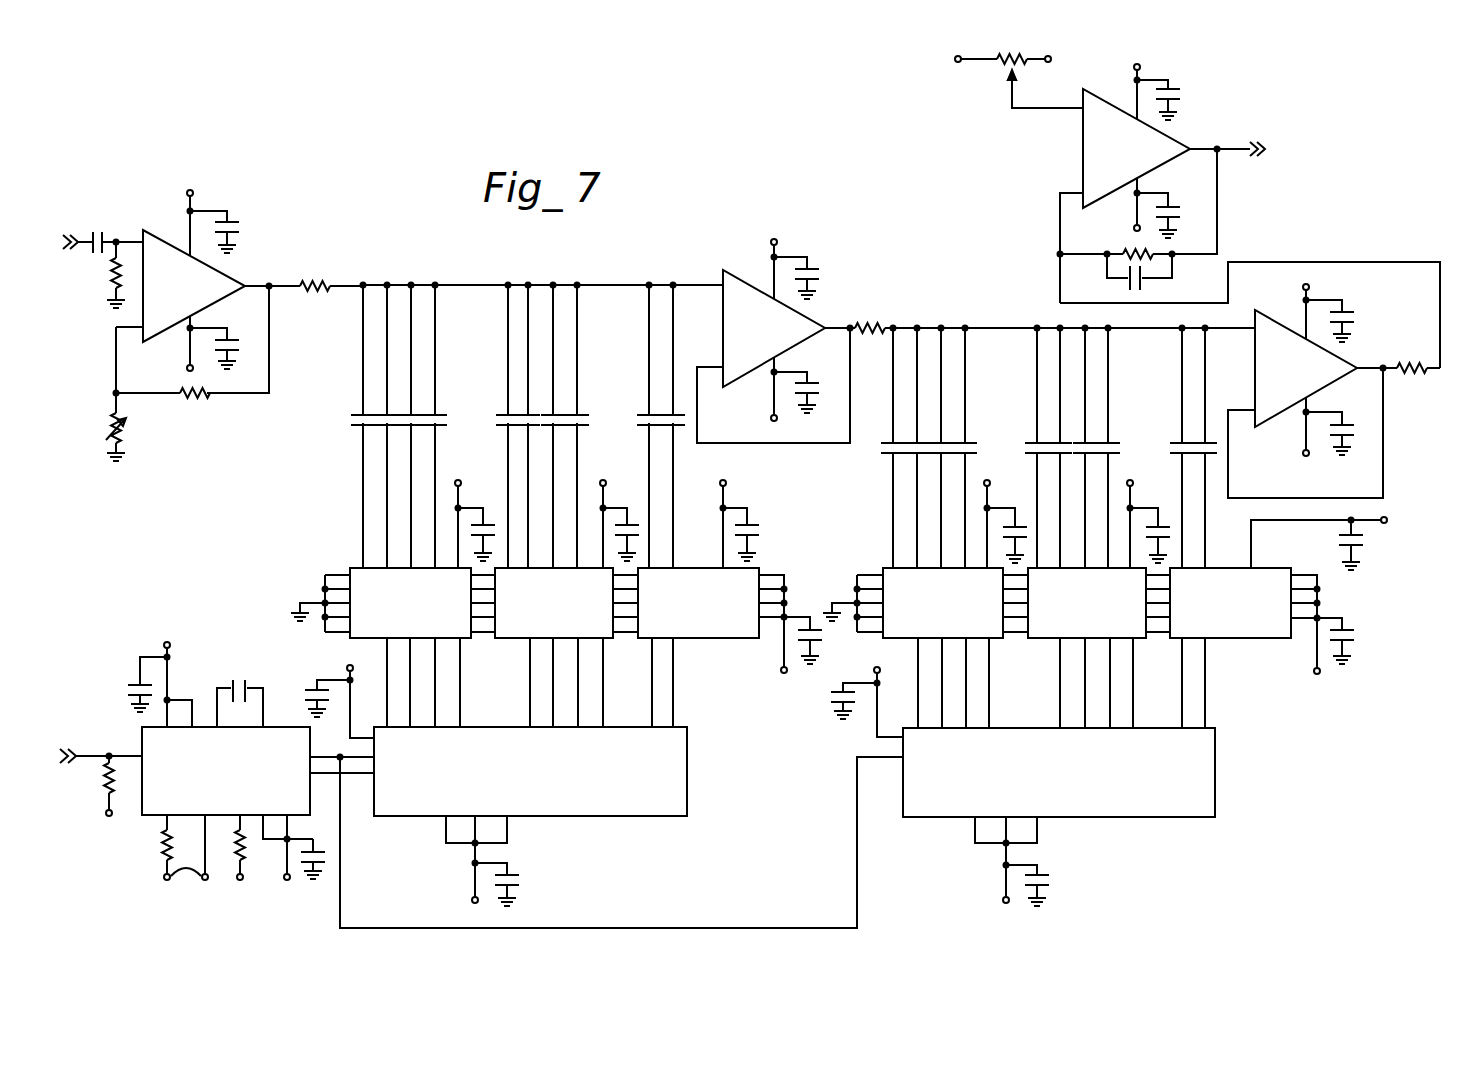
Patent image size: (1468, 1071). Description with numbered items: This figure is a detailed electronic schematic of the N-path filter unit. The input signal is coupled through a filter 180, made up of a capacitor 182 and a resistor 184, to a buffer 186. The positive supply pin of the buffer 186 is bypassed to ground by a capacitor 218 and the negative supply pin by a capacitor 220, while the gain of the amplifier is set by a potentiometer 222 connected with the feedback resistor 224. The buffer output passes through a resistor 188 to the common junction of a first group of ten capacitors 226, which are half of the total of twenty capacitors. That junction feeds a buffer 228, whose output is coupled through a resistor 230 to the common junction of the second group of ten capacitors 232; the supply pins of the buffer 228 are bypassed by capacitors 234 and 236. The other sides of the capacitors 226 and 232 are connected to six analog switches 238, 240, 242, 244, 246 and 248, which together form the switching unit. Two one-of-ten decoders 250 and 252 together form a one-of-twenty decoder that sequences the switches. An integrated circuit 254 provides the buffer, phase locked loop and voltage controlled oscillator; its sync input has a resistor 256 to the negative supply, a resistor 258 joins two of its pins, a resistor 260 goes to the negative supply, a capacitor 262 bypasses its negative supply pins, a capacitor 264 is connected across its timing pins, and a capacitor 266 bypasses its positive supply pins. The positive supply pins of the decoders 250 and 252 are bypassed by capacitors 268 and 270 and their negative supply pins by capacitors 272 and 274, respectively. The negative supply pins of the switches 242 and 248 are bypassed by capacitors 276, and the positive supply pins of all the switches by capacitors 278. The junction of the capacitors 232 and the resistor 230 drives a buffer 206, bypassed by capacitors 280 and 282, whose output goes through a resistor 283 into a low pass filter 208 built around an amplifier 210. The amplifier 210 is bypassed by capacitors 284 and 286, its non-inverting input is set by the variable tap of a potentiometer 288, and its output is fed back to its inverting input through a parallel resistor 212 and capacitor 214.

The filter 180 is at (92, 206).
The capacitor 182 is at (107, 227).
The resistor 184 is at (102, 288).
The buffer 186 is at (175, 237).
The resistor 188 is at (316, 286).
The buffer 206 is at (1270, 310).
The low pass filter 208 is at (1083, 278).
The amplifier 210 is at (1082, 166).
The resistor 212 is at (1148, 258).
The capacitor 214 is at (1144, 284).
The capacitor 218 is at (236, 222).
The capacitor 220 is at (257, 308).
The potentiometer 222 is at (104, 428).
The feedback resistor 224 is at (196, 395).
The capacitors 226 is at (500, 415).
The buffer 228 is at (740, 250).
The resistor 230 is at (872, 324).
The capacitors 232 is at (1038, 440).
The capacitor 234 is at (815, 268).
The capacitor 236 is at (830, 356).
The switch 238 is at (462, 640).
The switch 240 is at (606, 640).
The switch 242 is at (712, 640).
The switch 244 is at (994, 640).
The switch 246 is at (1140, 640).
The switch 248 is at (1248, 640).
The 1 of 10 decoder 250 is at (616, 818).
The 1 of 10 decoder 252 is at (1100, 818).
The integrated circuit 254 is at (142, 736).
The resistor 256 is at (102, 794).
The resistor 258 is at (162, 853).
The resistor 260 is at (245, 850).
The capacitor 262 is at (322, 846).
The capacitor 264 is at (240, 648).
The capacitor 266 is at (132, 687).
The capacitor 268 is at (310, 688).
The capacitor 270 is at (838, 702).
The capacitor 272 is at (520, 883).
The capacitor 274 is at (1048, 888).
The capacitors 276 is at (1360, 656).
The capacitors 278 is at (1354, 546).
The capacitor 280 is at (1350, 310).
The capacitor 282 is at (1350, 437).
The resistor 283 is at (1406, 366).
The capacitor 284 is at (1178, 220).
The capacitor 286 is at (1176, 98).
The potentiometer 288 is at (1006, 66).